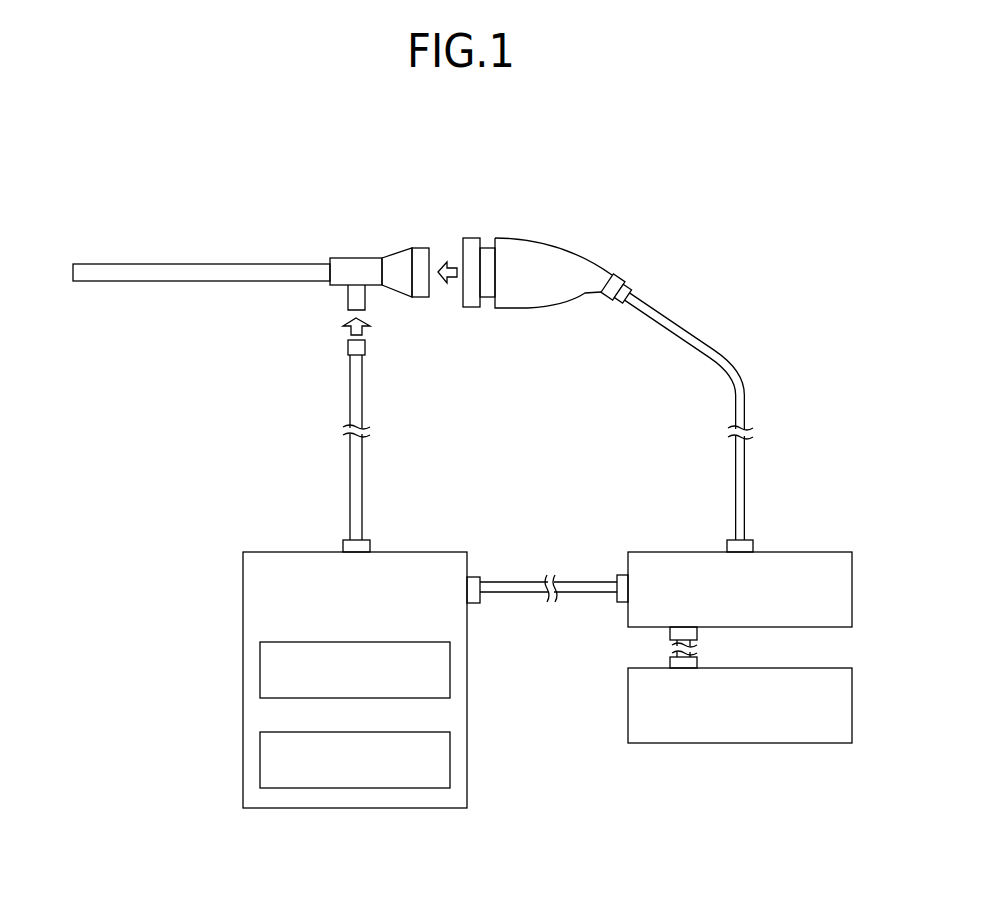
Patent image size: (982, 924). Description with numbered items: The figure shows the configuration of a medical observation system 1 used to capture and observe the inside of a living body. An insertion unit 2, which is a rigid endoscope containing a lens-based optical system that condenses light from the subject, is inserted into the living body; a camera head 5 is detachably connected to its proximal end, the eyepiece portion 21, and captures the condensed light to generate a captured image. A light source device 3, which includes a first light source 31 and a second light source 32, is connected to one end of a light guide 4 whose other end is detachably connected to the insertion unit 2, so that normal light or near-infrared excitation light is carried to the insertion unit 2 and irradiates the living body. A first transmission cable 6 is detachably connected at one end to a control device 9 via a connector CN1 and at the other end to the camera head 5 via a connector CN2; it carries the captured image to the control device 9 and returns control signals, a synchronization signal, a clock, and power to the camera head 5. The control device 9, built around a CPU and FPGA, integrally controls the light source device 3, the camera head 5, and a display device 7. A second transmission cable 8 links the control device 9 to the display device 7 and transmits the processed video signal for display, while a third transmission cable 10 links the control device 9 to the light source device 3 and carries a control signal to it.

The medical observation system 1 is at (702, 174).
The insertion unit 2 is at (278, 273).
The eyepiece portion 21 is at (422, 258).
The light source device 3 is at (410, 552).
The first light source 31 is at (385, 642).
The second light source 32 is at (385, 732).
The light guide 4 is at (350, 490).
The camera head 5 is at (515, 255).
The first transmission cable 6 is at (742, 390).
The display device 7 is at (802, 668).
The second transmission cable 8 is at (672, 655).
The control device 9 is at (802, 551).
The third transmission cable 10 is at (590, 582).
The connector CN1 is at (750, 538).
The connector CN2 is at (623, 298).